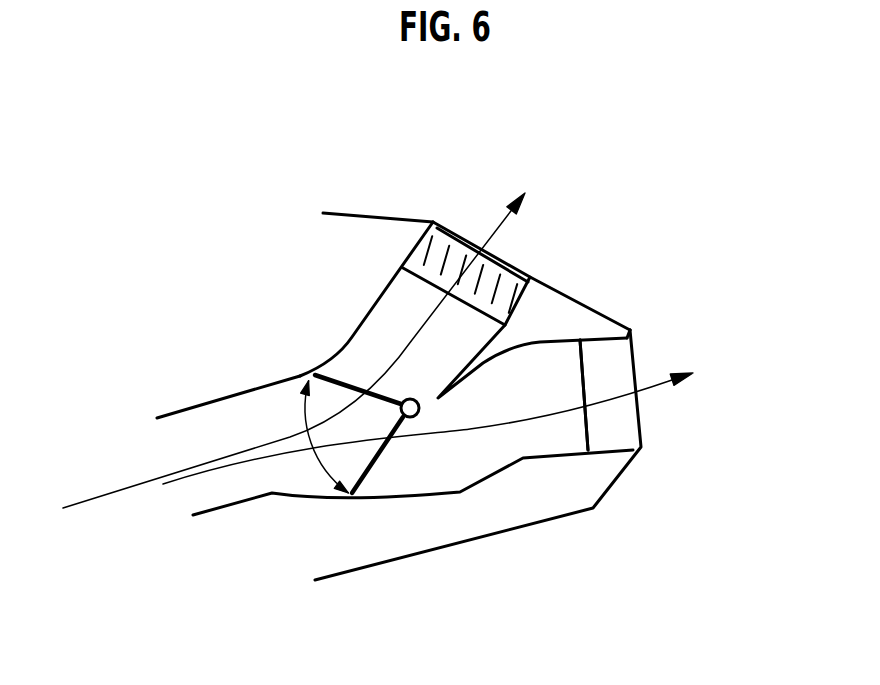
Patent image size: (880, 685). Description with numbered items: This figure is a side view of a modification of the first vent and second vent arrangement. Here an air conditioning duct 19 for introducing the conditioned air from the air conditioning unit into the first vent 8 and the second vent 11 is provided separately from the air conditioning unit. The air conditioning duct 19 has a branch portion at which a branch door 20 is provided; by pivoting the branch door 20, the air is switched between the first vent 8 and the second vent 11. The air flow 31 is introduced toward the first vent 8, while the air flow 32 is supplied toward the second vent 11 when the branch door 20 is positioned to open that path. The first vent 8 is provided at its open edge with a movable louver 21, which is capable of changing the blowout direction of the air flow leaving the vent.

The first vent 8 is at (622, 447).
The second vent 11 is at (417, 248).
The air conditioning duct 19 is at (253, 390).
The branch door 20 is at (375, 463).
The movable louver 21 is at (477, 220).
The air flow 31 is at (649, 380).
The air flow 32 is at (503, 225).